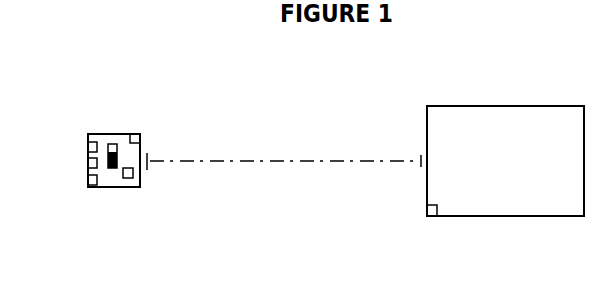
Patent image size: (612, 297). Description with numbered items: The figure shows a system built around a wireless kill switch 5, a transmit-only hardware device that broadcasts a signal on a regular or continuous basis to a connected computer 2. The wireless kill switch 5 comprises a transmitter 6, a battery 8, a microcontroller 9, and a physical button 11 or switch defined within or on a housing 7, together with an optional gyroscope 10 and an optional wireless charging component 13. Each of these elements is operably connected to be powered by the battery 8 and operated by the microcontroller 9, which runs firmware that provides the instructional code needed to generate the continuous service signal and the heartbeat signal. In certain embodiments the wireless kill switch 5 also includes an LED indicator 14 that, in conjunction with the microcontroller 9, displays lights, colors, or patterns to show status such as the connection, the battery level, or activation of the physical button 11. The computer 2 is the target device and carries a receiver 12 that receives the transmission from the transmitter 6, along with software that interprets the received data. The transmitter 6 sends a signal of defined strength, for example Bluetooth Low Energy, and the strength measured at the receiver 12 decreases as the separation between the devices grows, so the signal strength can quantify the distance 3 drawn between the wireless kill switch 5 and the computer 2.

The computer 2 is at (505, 105).
The distance D1 3 is at (305, 187).
The wireless kill switch 5 is at (99, 90).
The transmitter 6 is at (137, 177).
The housing 7 is at (132, 187).
The battery 8 is at (88, 165).
The microcontroller 9 is at (88, 182).
The gyroscope 10 is at (88, 148).
The physical button 11 is at (113, 144).
The receiver 12 is at (433, 217).
The wireless charging component 13 is at (138, 139).
The LED indicator 14 is at (113, 165).